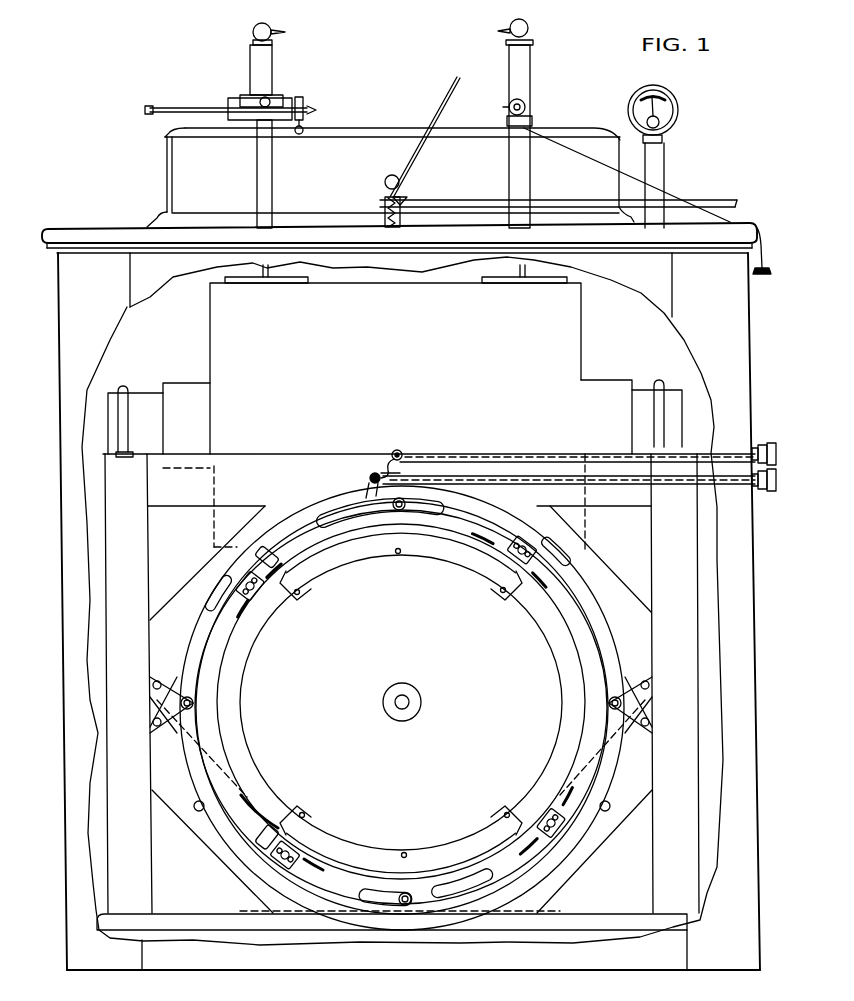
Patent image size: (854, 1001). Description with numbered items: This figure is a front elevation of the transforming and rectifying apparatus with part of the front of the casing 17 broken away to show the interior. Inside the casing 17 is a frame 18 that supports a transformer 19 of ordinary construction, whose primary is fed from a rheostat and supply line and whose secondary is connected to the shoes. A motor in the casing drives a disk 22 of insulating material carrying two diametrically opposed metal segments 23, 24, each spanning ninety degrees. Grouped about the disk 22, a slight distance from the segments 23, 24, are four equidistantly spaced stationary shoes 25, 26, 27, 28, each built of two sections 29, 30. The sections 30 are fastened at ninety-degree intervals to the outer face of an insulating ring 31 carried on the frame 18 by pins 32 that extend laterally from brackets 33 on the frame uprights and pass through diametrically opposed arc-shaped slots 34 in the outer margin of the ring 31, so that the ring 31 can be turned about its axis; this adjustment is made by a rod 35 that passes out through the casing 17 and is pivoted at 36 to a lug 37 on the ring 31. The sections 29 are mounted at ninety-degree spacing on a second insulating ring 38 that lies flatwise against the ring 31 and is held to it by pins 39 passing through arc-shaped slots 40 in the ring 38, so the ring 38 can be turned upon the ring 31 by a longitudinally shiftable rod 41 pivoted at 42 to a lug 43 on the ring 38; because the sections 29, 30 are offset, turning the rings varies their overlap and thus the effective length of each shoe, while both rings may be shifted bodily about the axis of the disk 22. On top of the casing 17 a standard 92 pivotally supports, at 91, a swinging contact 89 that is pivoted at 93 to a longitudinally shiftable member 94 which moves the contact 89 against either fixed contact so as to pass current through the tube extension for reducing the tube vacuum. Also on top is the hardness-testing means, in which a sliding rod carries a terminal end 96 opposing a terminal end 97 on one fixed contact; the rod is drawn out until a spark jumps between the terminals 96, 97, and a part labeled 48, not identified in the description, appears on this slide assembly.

The casing 17 is at (746, 322).
The frame 18 is at (690, 668).
The transformer 19 is at (578, 348).
The disk 22 is at (557, 733).
The segment 23 is at (307, 590).
The segment 24 is at (330, 838).
The shoe 25 is at (262, 582).
The shoe 26 is at (535, 560).
The shoe 27 is at (267, 855).
The shoe 28 is at (553, 840).
The shoe section 29 is at (273, 863).
The shoe section 30 is at (260, 830).
The ring 31 is at (216, 598).
The pin 32 is at (177, 718).
The bracket 33 is at (152, 712).
The outer ring 34 is at (190, 637).
The rod 35 is at (470, 452).
The pivotal connection 36 is at (402, 452).
The lug 37 is at (393, 463).
The ring 38 is at (478, 516).
The pin 39 is at (401, 510).
The slot 40 is at (358, 512).
The rod 41 is at (632, 478).
The pivotal connection 42 is at (373, 476).
The lug 43 is at (371, 488).
The slide rod 48 is at (240, 115).
The swinging contact 89 is at (413, 160).
The pivotal support 91 is at (386, 195).
The standard 92 is at (403, 210).
The pivotal connection 93 is at (386, 206).
The longitudinally shiftable member 94 is at (712, 200).
The terminal end 96 is at (316, 108).
The terminal end 97 is at (504, 107).